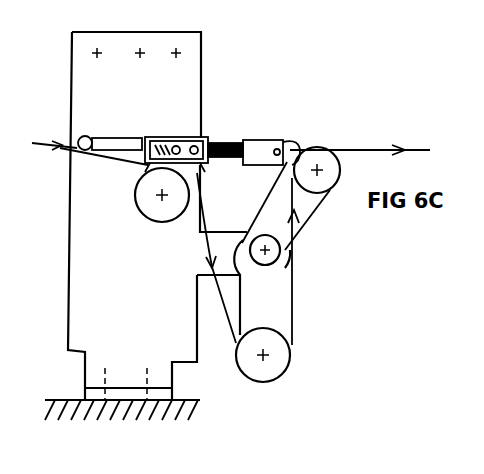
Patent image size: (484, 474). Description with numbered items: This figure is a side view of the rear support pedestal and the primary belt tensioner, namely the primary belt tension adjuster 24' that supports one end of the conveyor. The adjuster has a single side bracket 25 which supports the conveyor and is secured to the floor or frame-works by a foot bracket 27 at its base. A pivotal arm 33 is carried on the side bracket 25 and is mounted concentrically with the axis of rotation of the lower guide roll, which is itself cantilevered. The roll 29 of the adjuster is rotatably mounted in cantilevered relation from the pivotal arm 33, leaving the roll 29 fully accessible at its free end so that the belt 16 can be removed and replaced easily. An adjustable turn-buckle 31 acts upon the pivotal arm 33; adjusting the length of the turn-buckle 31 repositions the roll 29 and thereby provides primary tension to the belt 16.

The belt 16 is at (410, 147).
The primary belt tension adjuster 24' is at (314, 72).
The side bracket 25 is at (173, 92).
The foot bracket 27 is at (147, 395).
The roll 29 is at (330, 158).
The turn-buckle 31 is at (223, 212).
The pivotal arm 33 is at (313, 212).